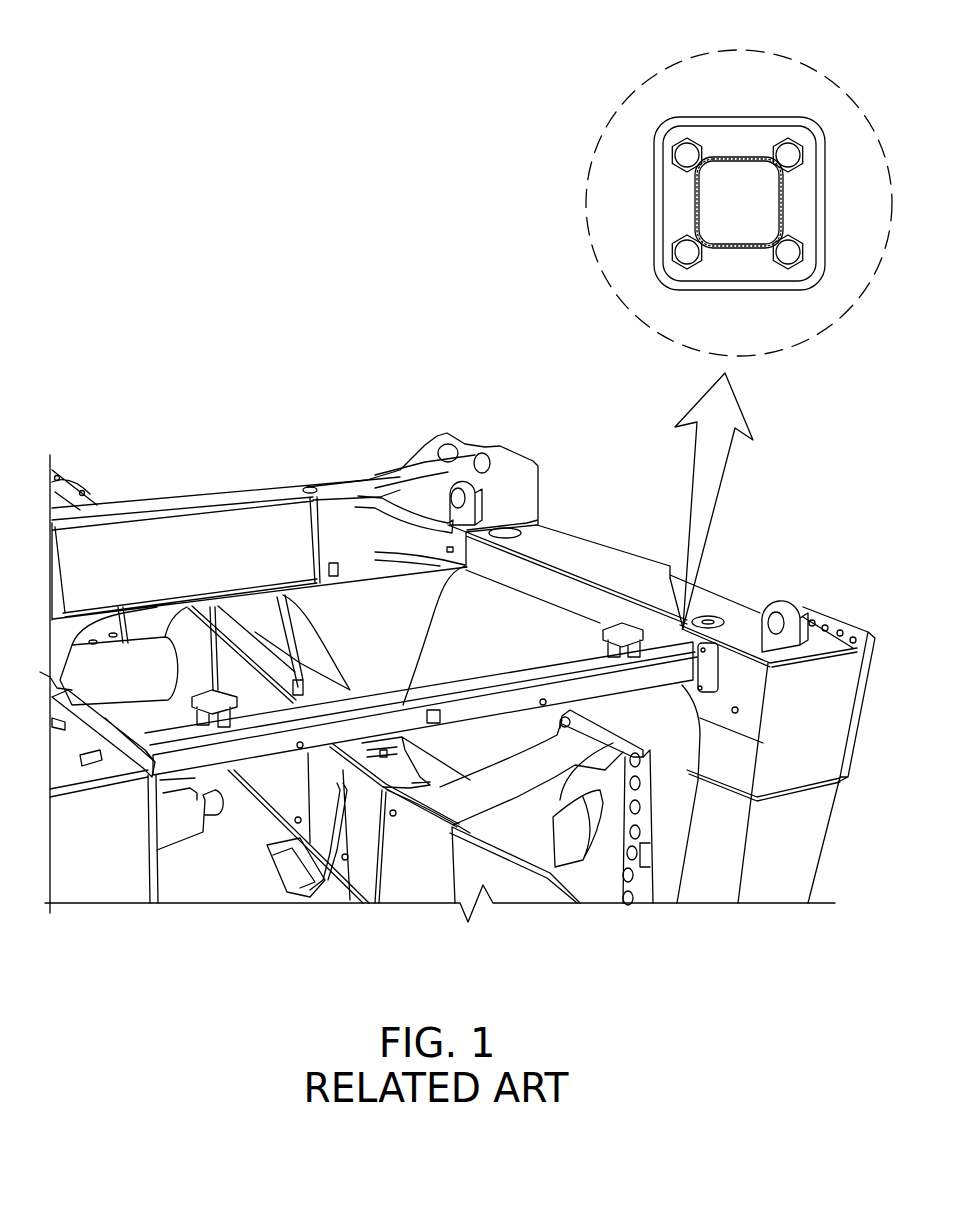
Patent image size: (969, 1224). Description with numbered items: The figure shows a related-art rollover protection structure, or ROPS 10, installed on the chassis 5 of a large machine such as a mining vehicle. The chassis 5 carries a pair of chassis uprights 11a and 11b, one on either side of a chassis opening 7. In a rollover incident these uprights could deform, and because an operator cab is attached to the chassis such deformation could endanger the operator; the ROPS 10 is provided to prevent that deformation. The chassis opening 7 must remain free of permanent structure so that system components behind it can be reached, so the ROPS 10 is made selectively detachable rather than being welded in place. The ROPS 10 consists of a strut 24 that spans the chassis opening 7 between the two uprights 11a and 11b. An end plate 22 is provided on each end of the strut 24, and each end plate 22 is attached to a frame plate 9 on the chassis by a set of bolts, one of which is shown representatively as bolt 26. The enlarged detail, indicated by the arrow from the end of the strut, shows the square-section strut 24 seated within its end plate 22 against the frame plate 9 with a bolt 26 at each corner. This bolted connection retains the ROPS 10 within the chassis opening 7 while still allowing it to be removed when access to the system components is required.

The chassis 5 is at (215, 503).
The chassis opening 7 is at (443, 637).
The frame plate 9 is at (669, 333).
The ROPS 10 is at (521, 677).
The chassis upright 11a is at (97, 863).
The chassis upright 11b is at (780, 863).
The end plate 22 is at (790, 127).
The strut 24 is at (697, 200).
The bolt 26 is at (793, 253).